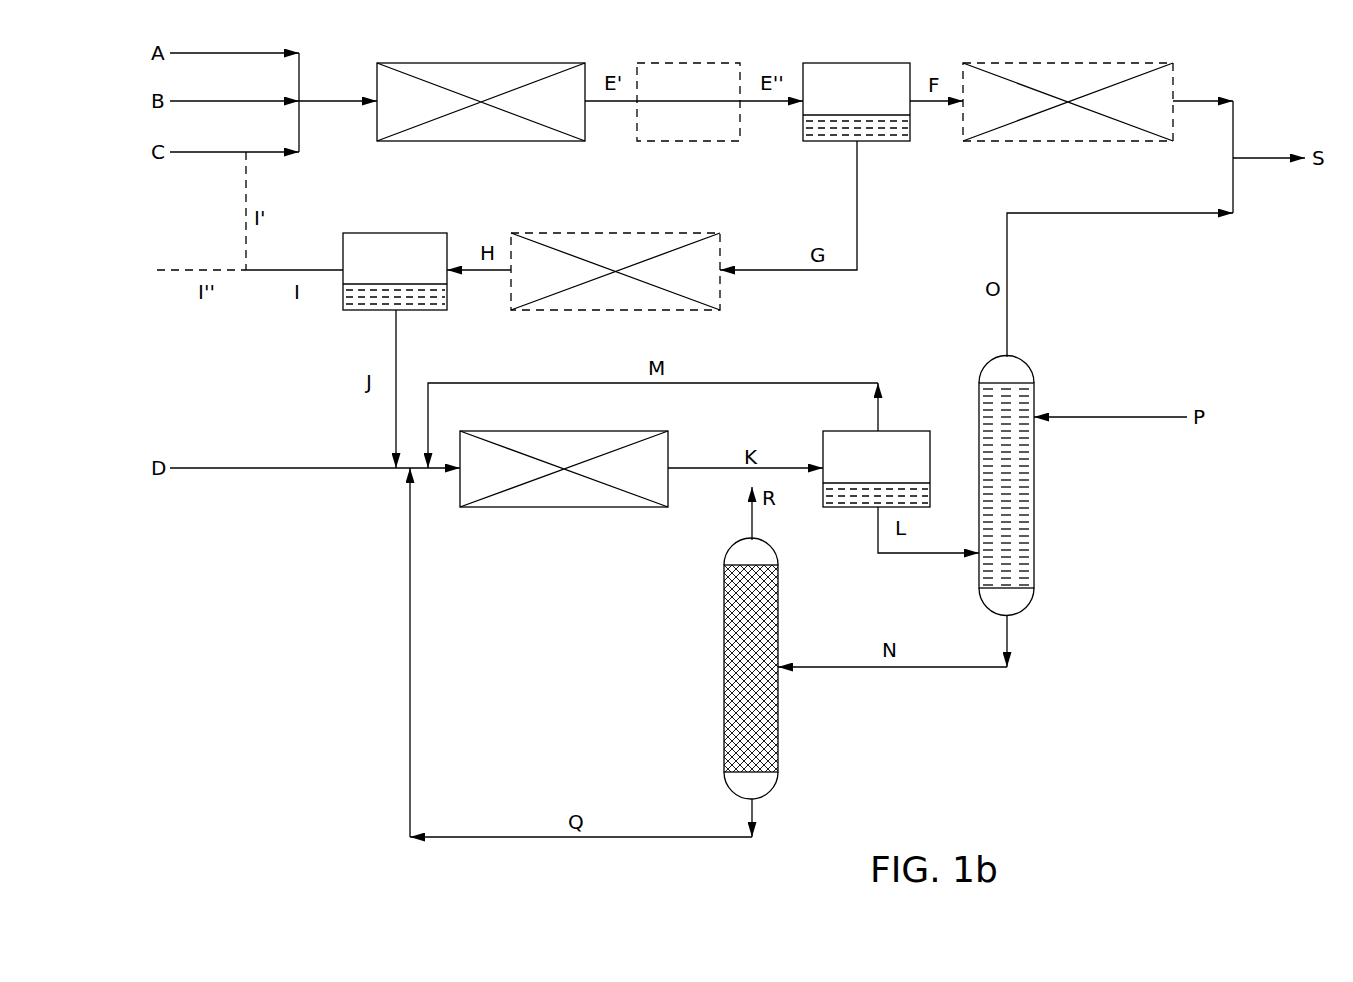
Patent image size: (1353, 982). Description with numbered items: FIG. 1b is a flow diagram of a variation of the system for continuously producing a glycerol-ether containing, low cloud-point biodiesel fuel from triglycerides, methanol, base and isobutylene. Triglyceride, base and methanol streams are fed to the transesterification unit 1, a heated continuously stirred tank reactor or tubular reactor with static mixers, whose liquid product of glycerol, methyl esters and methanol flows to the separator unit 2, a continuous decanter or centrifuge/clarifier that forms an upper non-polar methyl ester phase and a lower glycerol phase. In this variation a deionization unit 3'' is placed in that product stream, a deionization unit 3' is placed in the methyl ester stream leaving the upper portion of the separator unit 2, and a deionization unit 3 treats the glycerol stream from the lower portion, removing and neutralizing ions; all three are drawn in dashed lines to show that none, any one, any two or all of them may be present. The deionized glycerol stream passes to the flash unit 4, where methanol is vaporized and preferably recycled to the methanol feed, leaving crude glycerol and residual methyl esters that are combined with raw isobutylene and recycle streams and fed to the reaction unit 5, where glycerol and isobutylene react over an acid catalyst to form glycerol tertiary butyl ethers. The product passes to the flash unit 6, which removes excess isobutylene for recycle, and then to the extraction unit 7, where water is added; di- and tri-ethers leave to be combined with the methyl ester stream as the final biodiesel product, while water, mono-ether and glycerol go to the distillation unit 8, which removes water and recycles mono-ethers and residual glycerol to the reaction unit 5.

The transesterification unit 1 is at (525, 61).
The separator unit 2 is at (897, 61).
The deionization unit 3 is at (615, 256).
The deionization unit 3' is at (1068, 87).
The deionization unit 3'' is at (688, 87).
The flash unit 4 is at (435, 231).
The reaction unit 5 is at (624, 510).
The flash unit 6 is at (925, 429).
The extraction unit 7 is at (1037, 492).
The distillation unit 8 is at (722, 655).